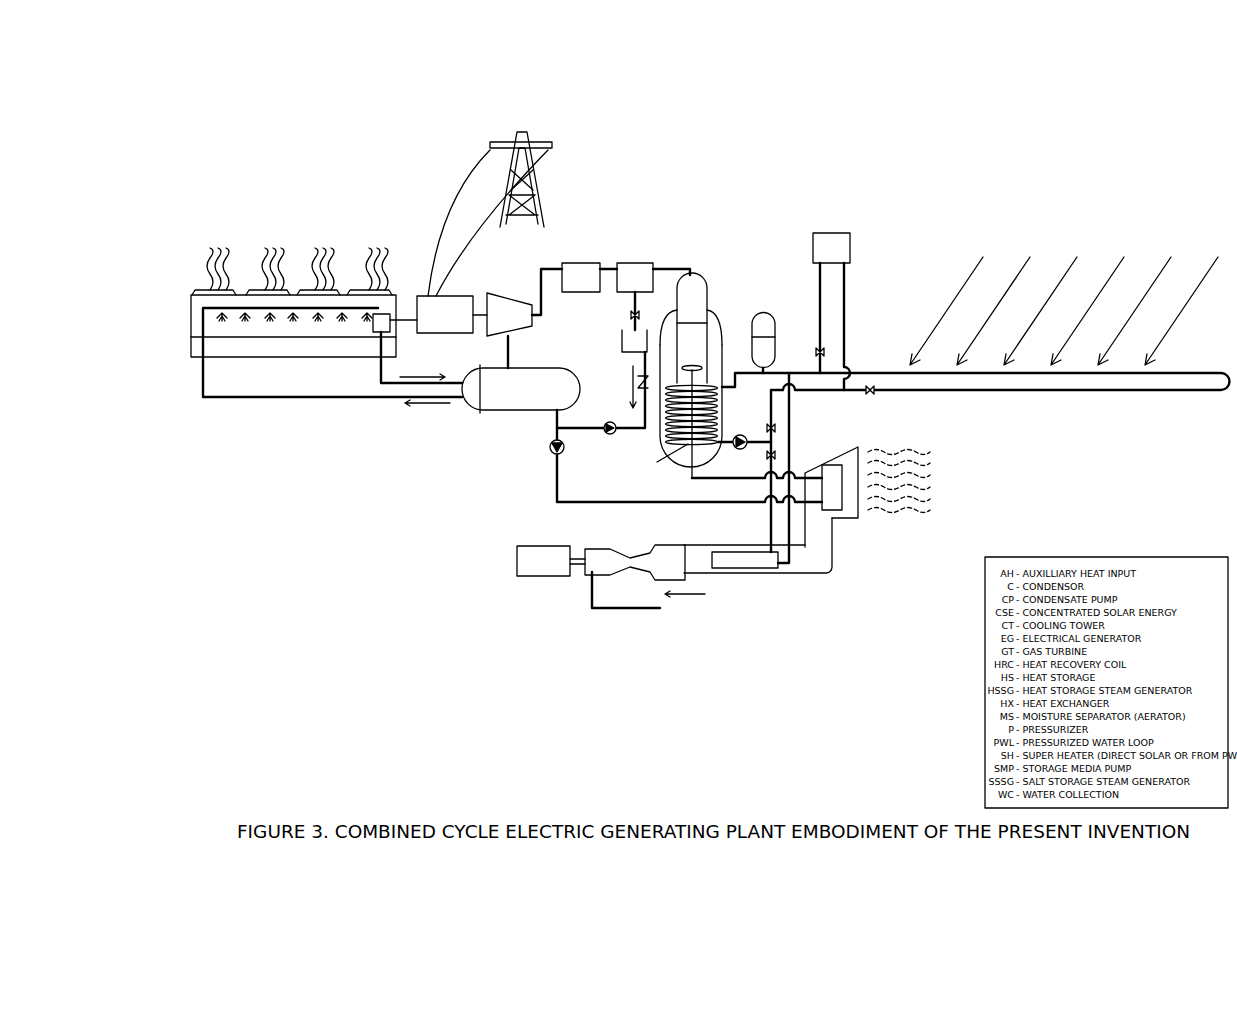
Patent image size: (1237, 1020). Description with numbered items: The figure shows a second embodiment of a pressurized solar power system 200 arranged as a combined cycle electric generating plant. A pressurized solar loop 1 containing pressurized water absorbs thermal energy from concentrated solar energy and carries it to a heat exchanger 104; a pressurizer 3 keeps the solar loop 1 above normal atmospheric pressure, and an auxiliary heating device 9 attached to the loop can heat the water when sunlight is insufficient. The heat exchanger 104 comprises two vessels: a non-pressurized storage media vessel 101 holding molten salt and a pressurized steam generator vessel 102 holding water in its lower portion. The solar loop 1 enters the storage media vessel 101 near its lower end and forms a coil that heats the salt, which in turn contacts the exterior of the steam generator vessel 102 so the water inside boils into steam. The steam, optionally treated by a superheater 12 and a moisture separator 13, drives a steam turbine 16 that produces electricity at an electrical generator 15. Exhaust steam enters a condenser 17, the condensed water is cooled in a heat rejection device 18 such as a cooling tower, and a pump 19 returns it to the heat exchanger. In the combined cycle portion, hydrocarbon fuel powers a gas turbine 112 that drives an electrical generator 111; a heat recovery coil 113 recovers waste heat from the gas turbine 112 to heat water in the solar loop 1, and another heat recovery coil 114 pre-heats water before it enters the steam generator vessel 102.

The pressurized solar power system 200 is at (925, 76).
The pressurized solar loop 1 is at (866, 371).
The pressurizer 3 is at (765, 312).
The auxiliary heating device 9 is at (849, 233).
The superheater 12 is at (575, 262).
The moisture separator 13 is at (636, 262).
The electrical generator 15 is at (455, 295).
The steam turbine 16 is at (506, 292).
The condenser 17 is at (470, 408).
The heat rejection device 18 is at (192, 358).
The pump 19 is at (551, 452).
The storage media vessel 101 is at (722, 323).
The steam generator vessel 102 is at (703, 272).
The heat exchanger 104 is at (660, 431).
The electrical generator 111 is at (522, 573).
The gas turbine 112 is at (596, 563).
The heat recovery coil 113 is at (773, 567).
The heat recovery coil 114 is at (842, 508).